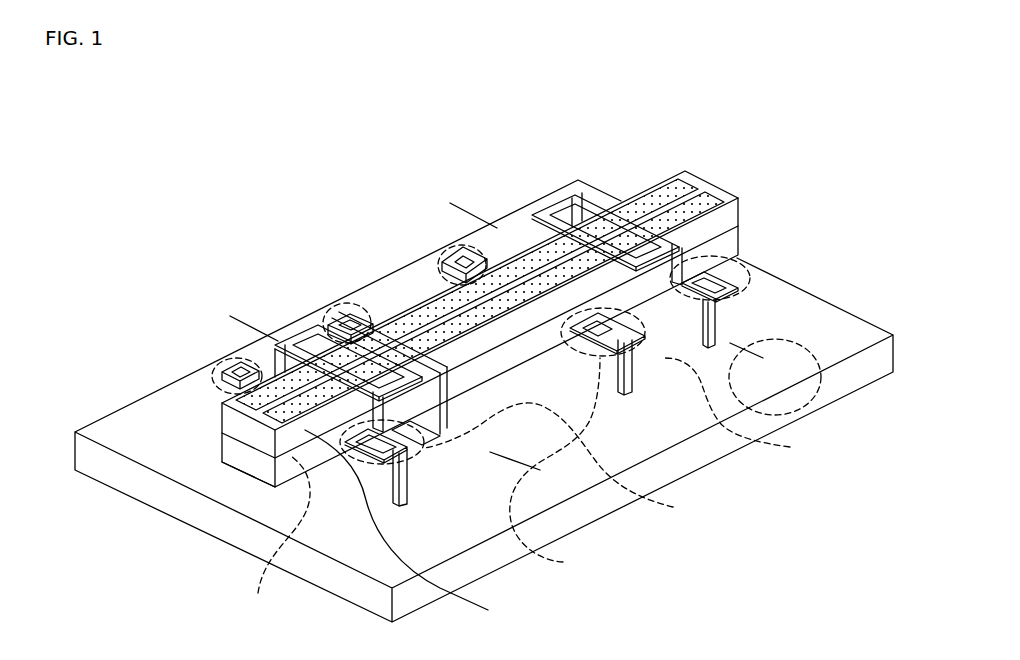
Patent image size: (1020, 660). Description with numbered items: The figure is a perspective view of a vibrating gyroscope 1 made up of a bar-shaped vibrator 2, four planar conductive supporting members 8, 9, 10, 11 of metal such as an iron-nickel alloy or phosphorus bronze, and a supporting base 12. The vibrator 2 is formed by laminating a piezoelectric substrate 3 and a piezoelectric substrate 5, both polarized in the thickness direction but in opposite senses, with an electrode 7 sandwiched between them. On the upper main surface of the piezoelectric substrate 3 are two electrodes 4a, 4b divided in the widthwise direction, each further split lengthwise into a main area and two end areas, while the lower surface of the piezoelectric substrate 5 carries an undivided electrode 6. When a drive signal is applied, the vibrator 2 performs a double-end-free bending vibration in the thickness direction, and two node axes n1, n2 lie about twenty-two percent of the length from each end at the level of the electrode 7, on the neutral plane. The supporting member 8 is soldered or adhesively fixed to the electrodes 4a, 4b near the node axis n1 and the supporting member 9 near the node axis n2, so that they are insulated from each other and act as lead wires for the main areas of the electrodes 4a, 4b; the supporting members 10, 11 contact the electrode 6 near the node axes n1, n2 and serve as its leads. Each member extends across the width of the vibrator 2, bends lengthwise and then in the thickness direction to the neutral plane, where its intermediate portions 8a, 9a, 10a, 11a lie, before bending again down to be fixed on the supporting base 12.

The vibrating gyroscope 1 is at (369, 126).
The vibrator 2 is at (428, 327).
The piezoelectric substrate 3 is at (233, 422).
The electrode 4a is at (634, 205).
The electrode 4b is at (688, 207).
The piezoelectric substrate 5 is at (247, 462).
The electrode 6 is at (281, 536).
The electrode 7 is at (407, 526).
The supporting member 8 is at (286, 347).
The intermediate portions 8a is at (230, 357).
The supporting member 9 is at (560, 205).
The intermediate portions 9a is at (765, 290).
The supporting member 10 is at (343, 320).
The intermediate portions 10a is at (372, 307).
The supporting member 11 is at (458, 257).
The intermediate portions 11a is at (482, 240).
The supporting base 12 is at (847, 333).
The node axis n1 is at (522, 465).
The node axis n2 is at (735, 412).